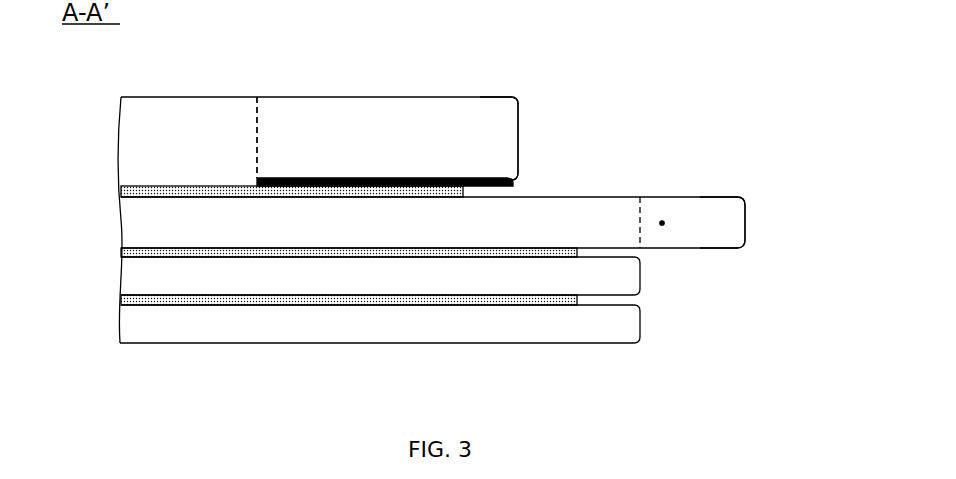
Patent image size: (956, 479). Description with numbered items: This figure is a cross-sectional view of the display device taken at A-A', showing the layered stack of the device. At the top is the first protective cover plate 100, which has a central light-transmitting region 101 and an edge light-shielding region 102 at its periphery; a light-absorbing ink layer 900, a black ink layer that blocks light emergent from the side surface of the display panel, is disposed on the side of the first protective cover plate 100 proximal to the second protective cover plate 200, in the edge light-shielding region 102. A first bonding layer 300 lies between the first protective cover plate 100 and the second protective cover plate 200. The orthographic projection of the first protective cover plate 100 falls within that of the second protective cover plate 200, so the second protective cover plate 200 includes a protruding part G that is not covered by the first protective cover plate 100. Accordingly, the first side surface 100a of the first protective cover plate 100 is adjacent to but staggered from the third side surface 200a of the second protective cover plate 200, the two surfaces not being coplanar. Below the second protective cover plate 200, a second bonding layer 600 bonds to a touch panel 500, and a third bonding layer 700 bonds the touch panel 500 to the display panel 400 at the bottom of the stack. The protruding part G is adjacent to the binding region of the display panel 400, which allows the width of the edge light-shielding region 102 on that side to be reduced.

The first protective cover plate 100 is at (287, 120).
The central light-transmitting region 101 is at (212, 122).
The edge light-shielding region 102 is at (307, 122).
The first side surface 100a is at (518, 126).
The light-absorbing ink layer 900 is at (483, 172).
The first bonding layer 300 is at (152, 180).
The second protective cover plate 200 is at (412, 218).
The third side surface 200a is at (747, 218).
The protruding part G is at (704, 265).
The second bonding layer 600 is at (223, 264).
The display panel 400 is at (317, 329).
The touch panel 500 is at (393, 301).
The third bonding layer 700 is at (468, 311).